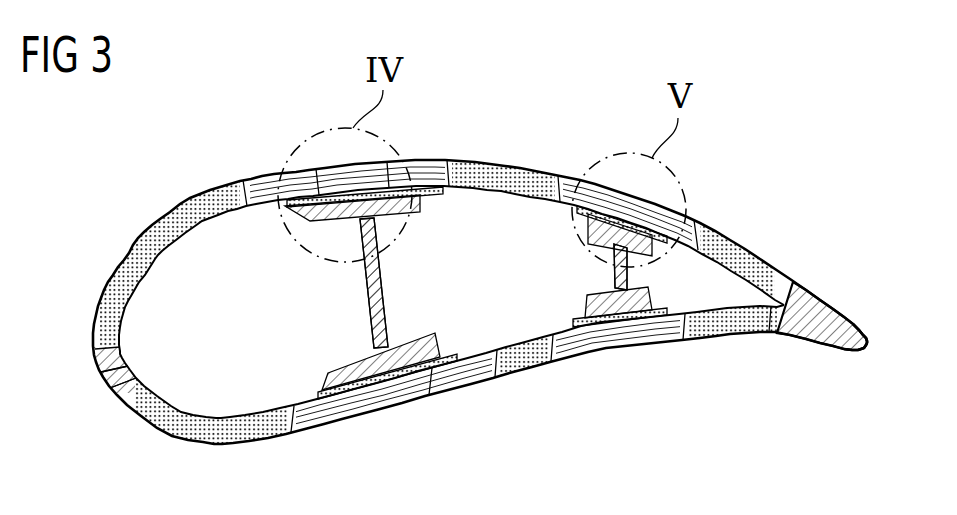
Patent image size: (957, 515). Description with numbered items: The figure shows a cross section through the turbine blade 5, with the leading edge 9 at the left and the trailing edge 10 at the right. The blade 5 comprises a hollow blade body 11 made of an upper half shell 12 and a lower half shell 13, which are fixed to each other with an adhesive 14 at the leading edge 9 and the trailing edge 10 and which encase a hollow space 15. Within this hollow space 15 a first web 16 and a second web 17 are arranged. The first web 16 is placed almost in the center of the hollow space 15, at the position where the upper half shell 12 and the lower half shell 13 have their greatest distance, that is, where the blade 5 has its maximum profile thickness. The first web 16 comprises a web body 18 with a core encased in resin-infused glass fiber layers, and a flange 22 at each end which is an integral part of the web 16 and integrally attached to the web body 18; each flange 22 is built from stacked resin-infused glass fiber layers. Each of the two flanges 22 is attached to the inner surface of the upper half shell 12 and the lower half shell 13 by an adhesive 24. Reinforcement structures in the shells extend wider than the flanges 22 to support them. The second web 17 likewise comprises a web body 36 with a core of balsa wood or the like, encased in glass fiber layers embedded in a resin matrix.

The turbine blade 5 is at (813, 170).
The leading edge 9 is at (100, 392).
The trailing edge 10 is at (870, 352).
The hollow blade body 11 is at (513, 168).
The upper half shell 12 is at (155, 222).
The lower half shell 13 is at (163, 440).
The adhesive 14 is at (825, 313).
The hollow space 15 is at (222, 392).
The first web 16 is at (367, 313).
The second web 17 is at (617, 275).
The web body 18 is at (378, 292).
The flange 22 is at (428, 210).
The adhesive 24 is at (323, 222).
The web body 36 is at (638, 275).